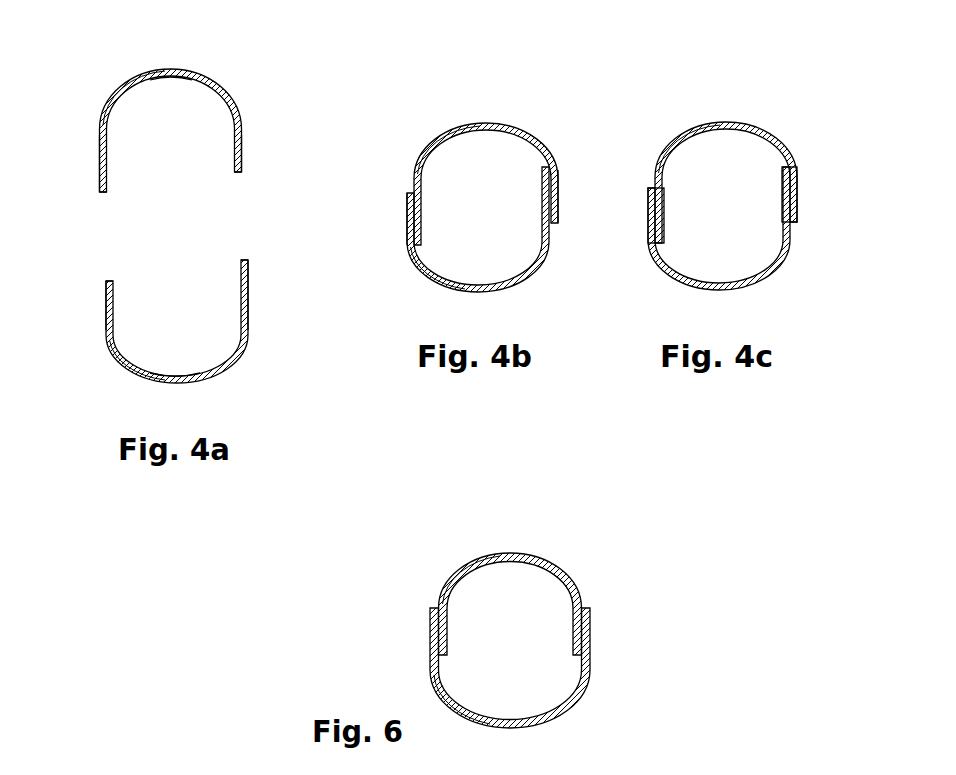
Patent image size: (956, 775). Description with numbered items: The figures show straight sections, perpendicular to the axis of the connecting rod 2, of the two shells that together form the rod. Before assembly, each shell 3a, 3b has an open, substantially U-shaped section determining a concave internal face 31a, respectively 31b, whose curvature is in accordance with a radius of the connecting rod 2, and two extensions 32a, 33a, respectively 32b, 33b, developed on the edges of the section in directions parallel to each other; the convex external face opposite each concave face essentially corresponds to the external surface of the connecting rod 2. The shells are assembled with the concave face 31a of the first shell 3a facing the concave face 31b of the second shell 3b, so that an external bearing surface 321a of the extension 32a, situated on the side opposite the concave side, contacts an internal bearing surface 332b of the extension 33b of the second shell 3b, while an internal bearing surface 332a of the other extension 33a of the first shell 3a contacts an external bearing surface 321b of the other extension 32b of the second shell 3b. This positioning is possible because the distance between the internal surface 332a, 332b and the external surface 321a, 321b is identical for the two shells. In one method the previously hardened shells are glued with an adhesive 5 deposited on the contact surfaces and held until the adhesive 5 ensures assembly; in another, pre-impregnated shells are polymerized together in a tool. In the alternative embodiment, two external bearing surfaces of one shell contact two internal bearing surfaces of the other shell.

In FIG. 4b, the connecting rod 2 is at (498, 193).
In FIG. 4c, the connecting rod 2 is at (729, 187).
In FIG. 6, the connecting rod 2 is at (554, 617).
In FIG. 4a, the first shell 3a is at (210, 387).
In FIG. 4b, the first shell 3a is at (520, 285).
In FIG. 4c, the first shell 3a is at (750, 285).
In FIG. 6, the first shell 3a is at (555, 710).
In FIG. 4a, the second shell 3b is at (201, 60).
In FIG. 4b, the second shell 3b is at (470, 124).
In FIG. 4c, the second shell 3b is at (708, 124).
In FIG. 6, the second shell 3b is at (504, 553).
In FIG. 4b, the adhesive 5 is at (405, 217).
In FIG. 4a, the concave internal face of the first shell 31a is at (160, 364).
In FIG. 4a, the concave internal face of the second shell 31b is at (176, 82).
In FIG. 4a, the extension of the first shell 32a is at (105, 315).
In FIG. 4a, the extension of the second shell 32b is at (243, 128).
In FIG. 4a, the other extension of the first shell 33a is at (248, 310).
In FIG. 4a, the other extension of the second shell 33b is at (98, 157).
In FIG. 4a, the external bearing surface 321a is at (103, 296).
In FIG. 4a, the external bearing surface 321b is at (242, 163).
In FIG. 4a, the internal bearing surface 332a is at (238, 288).
In FIG. 4a, the internal bearing surface 332b is at (108, 167).